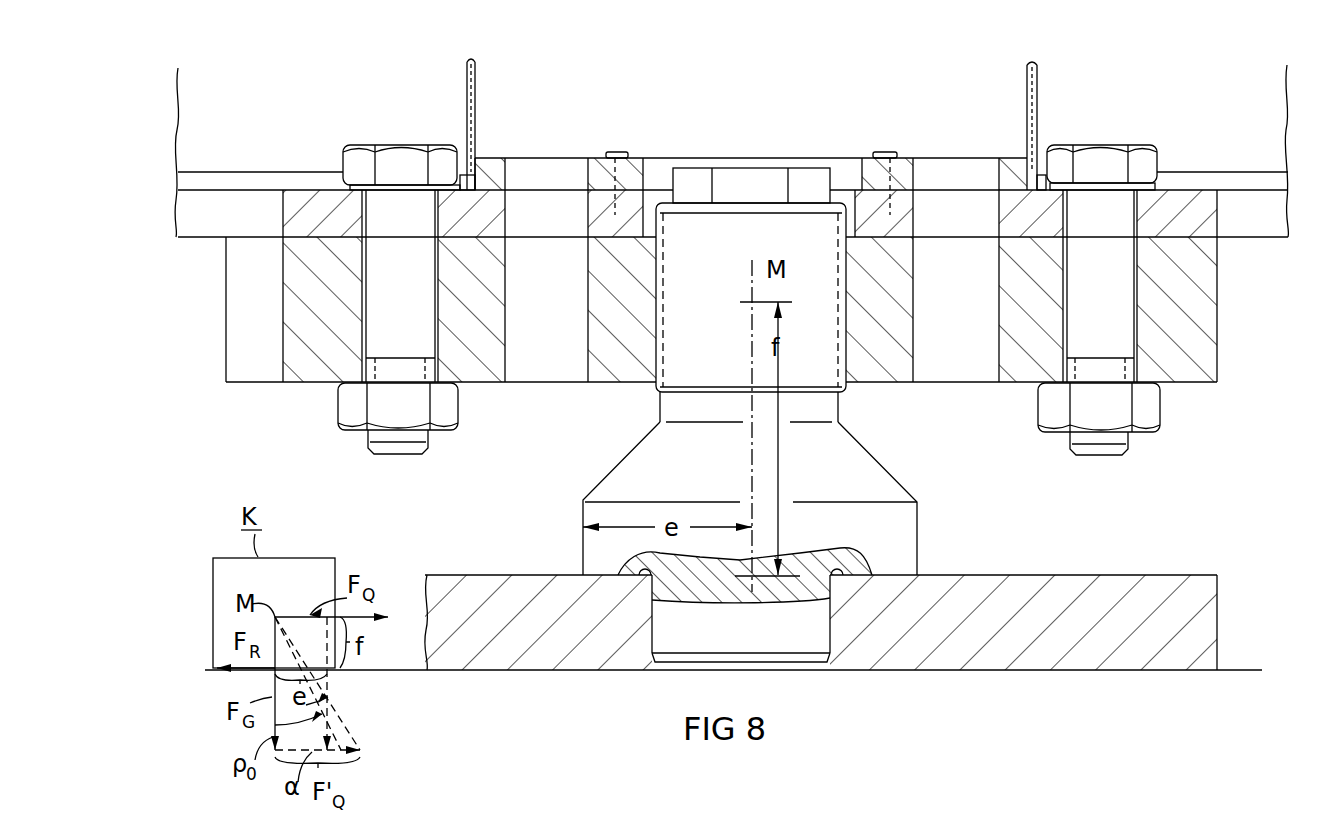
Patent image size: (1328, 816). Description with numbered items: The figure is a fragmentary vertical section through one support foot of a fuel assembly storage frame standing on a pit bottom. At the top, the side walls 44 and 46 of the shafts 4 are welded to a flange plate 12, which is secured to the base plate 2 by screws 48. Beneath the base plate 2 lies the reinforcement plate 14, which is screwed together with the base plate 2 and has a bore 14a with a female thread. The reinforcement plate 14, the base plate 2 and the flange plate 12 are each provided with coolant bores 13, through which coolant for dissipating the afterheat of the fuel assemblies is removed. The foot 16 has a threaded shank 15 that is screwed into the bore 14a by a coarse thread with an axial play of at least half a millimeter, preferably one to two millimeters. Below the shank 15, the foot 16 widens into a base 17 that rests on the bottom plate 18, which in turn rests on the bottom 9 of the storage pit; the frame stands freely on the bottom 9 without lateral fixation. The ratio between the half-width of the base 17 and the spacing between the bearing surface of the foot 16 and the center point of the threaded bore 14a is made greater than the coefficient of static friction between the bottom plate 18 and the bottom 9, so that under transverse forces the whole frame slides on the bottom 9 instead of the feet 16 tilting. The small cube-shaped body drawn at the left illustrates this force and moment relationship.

The base plate 2 is at (1195, 218).
The shafts 4 is at (776, 252).
The bottom 9 is at (1262, 670).
The flange plate 12 is at (908, 158).
The coolant bores 13 is at (536, 345).
The reinforcement plate 14 is at (1195, 312).
The bore 14a is at (663, 305).
The threaded shank 15 is at (817, 365).
The foot 16 is at (855, 475).
The base 17 is at (900, 549).
The bottom plate 18 is at (1018, 633).
The side wall 44 is at (1037, 90).
The side wall 46 is at (467, 100).
The screws 48 is at (615, 155).